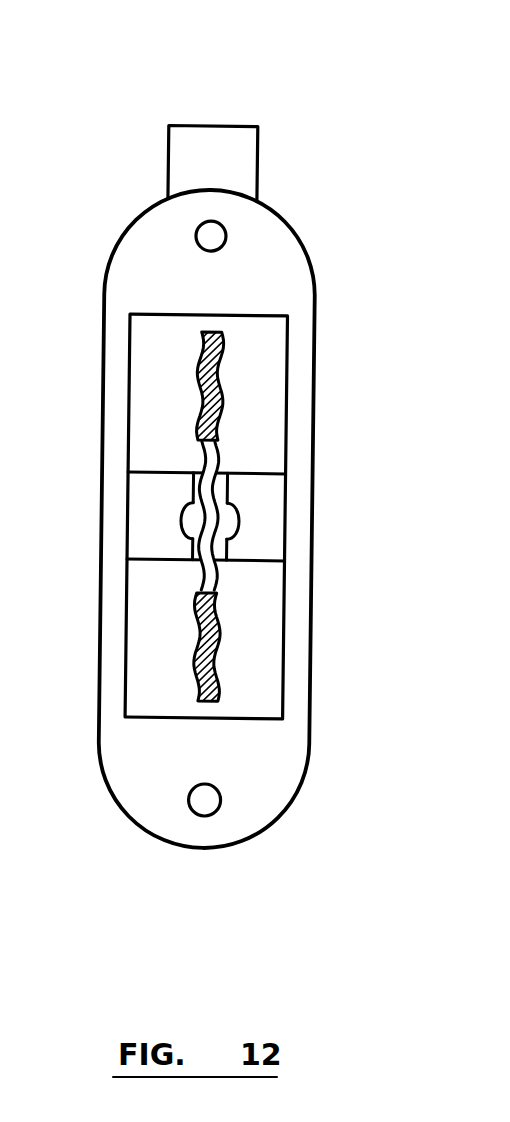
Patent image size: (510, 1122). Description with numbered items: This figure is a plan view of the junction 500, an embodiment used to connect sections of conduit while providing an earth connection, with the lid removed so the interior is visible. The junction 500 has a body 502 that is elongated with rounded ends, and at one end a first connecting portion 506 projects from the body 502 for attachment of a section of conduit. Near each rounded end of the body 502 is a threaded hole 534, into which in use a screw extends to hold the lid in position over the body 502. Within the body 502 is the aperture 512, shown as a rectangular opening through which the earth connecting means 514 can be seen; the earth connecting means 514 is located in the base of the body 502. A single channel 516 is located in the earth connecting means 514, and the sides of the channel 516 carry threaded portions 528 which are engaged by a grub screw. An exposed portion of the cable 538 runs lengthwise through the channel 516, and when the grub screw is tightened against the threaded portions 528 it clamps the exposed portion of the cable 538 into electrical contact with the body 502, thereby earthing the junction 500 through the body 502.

The junction 500 is at (209, 481).
The body 502 is at (160, 273).
The first connecting portion 506 is at (218, 153).
The aperture 512 is at (287, 637).
The earth connecting means 514 is at (263, 523).
The channel 516 is at (198, 492).
The threaded portions 528 is at (188, 522).
The threaded holes 534 is at (210, 236).
The cable 538 is at (220, 410).